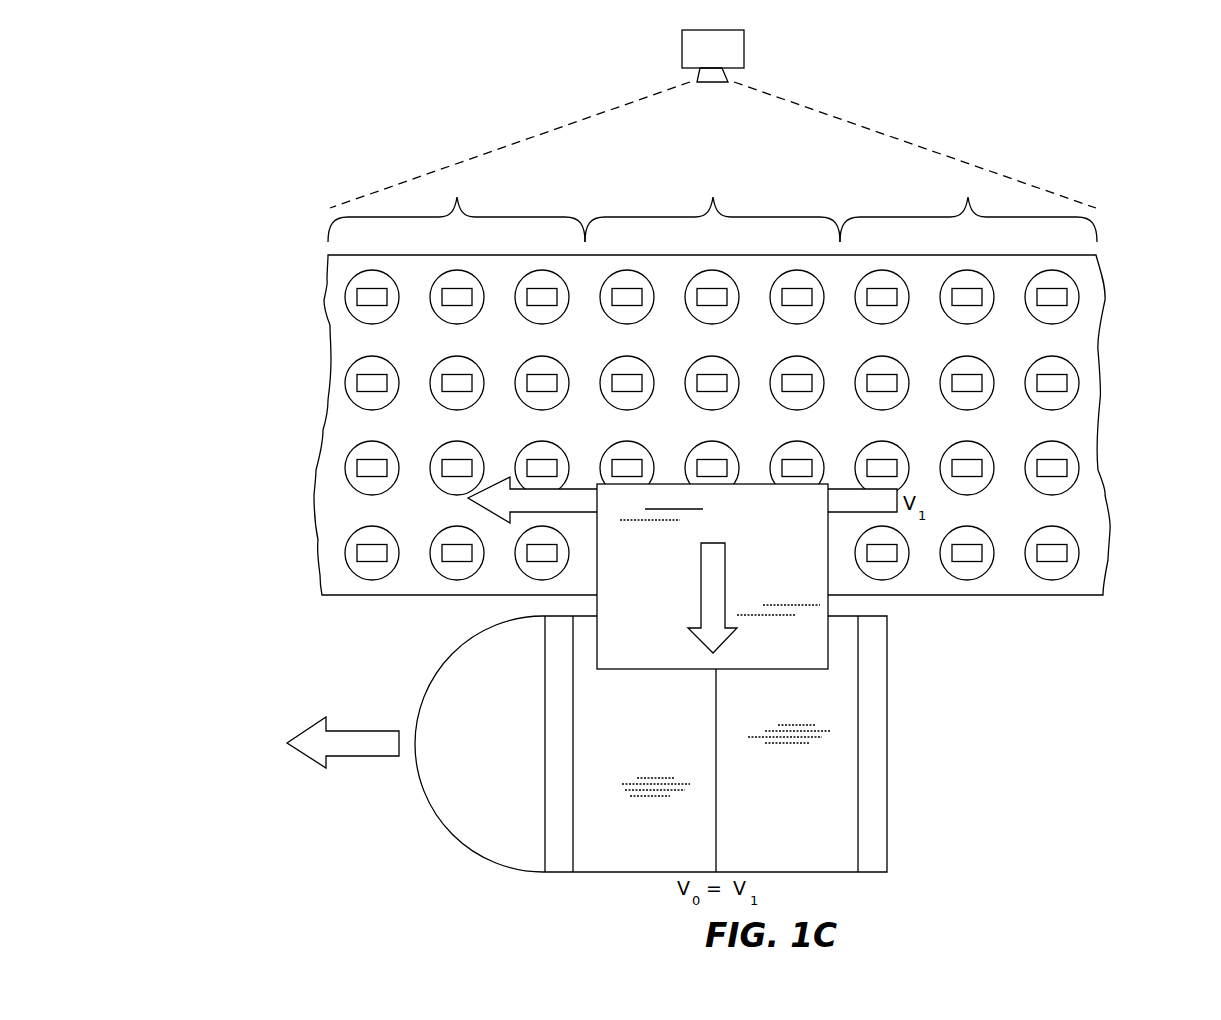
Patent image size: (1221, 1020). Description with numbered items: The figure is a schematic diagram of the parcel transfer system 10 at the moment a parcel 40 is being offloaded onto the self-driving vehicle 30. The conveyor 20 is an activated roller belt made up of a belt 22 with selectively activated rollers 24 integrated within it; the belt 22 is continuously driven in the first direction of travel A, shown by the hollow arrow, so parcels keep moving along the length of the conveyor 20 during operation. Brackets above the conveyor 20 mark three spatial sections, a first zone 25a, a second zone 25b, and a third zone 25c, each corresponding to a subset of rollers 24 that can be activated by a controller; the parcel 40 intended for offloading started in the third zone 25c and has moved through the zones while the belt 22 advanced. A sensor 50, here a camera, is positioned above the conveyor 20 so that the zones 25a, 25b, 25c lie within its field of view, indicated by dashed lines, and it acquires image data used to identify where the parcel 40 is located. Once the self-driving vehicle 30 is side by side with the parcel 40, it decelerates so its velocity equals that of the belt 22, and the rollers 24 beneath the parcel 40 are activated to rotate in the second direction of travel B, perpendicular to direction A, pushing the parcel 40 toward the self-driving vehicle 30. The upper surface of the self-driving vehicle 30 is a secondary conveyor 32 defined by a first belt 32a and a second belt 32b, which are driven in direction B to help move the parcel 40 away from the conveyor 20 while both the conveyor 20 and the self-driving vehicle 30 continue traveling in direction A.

The parcel transfer system 10 is at (203, 160).
The conveyor 20 is at (1098, 335).
The belt 22 is at (1083, 422).
The rollers 24 is at (371, 381).
The first zone 25a is at (456, 207).
The second zone 25b is at (712, 207).
The third zone 25c is at (968, 207).
The self-driving vehicle 30 is at (887, 700).
The secondary conveyor 32 is at (596, 873).
The first belt 32a is at (835, 873).
The second belt 32b is at (630, 873).
The parcel 40 is at (812, 642).
The sensors 50 is at (682, 50).
The first direction of travel A is at (517, 513).
The second direction of travel B is at (701, 592).